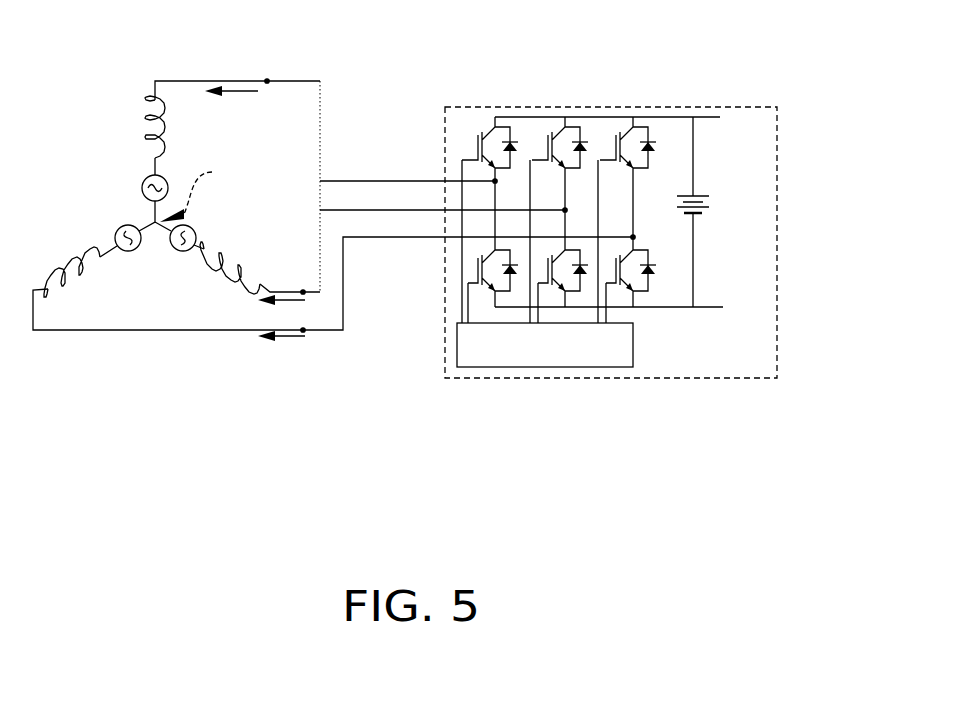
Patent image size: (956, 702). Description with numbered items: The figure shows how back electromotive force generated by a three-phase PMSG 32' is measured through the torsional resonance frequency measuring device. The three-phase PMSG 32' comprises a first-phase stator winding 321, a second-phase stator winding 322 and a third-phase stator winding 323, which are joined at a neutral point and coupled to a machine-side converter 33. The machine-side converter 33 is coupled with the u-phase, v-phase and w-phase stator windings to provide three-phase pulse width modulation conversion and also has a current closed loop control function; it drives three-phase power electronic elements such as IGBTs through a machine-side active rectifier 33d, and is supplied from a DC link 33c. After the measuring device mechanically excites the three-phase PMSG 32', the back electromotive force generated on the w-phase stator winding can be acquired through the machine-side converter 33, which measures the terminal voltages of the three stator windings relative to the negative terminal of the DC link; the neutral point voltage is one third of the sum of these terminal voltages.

The three-phase PMSG 32' is at (333, 187).
The first-phase stator winding 321 is at (143, 123).
The second-phase stator winding 322 is at (225, 270).
The third-phase stator winding 323 is at (70, 268).
The machine-side converter 33 is at (567, 90).
The DC power source 33c is at (700, 216).
The machine-side active rectifier 33d is at (570, 360).